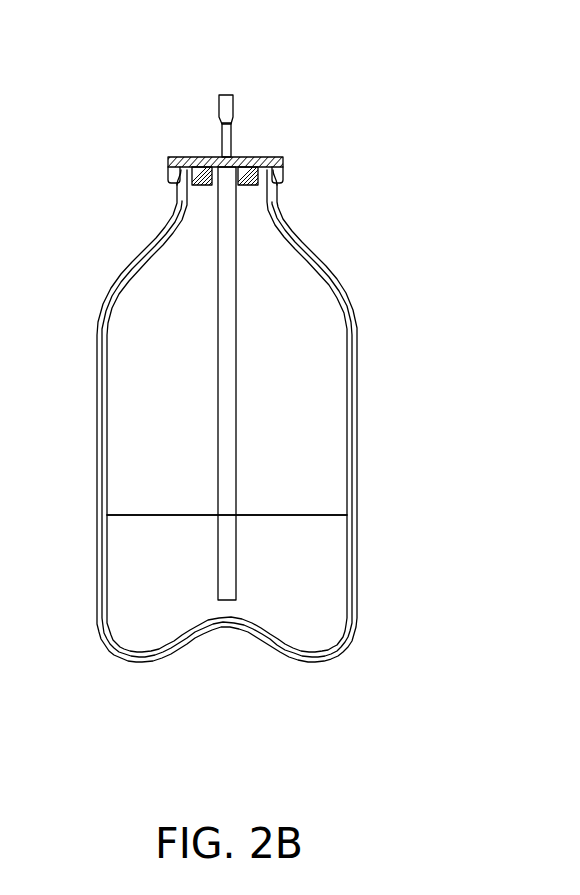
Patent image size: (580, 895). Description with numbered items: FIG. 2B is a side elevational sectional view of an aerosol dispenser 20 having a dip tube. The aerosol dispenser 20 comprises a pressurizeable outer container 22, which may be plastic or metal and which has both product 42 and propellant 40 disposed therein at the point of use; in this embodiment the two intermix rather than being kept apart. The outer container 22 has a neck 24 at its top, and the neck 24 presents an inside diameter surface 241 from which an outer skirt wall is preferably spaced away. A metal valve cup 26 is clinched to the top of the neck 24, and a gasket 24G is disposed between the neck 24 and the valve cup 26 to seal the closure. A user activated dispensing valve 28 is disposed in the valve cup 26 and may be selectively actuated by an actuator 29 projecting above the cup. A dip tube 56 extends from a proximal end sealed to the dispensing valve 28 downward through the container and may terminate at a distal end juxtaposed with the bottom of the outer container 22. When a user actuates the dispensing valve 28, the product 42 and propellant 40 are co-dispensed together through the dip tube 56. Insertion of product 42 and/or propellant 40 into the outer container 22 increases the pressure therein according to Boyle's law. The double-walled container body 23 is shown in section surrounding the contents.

The aerosol dispenser 20 is at (271, 399).
The outer container 22 is at (352, 418).
The inner layer 23 is at (320, 253).
The neck 24 is at (283, 161).
The gasket 24G is at (263, 157).
The inside diameter surface 241 is at (273, 192).
The valve cup 26 is at (168, 170).
The dispensing valve 28 is at (247, 157).
The actuator 29 is at (222, 110).
The propellant 40 is at (188, 470).
The product 42 is at (128, 565).
The dip tube 56 is at (228, 352).